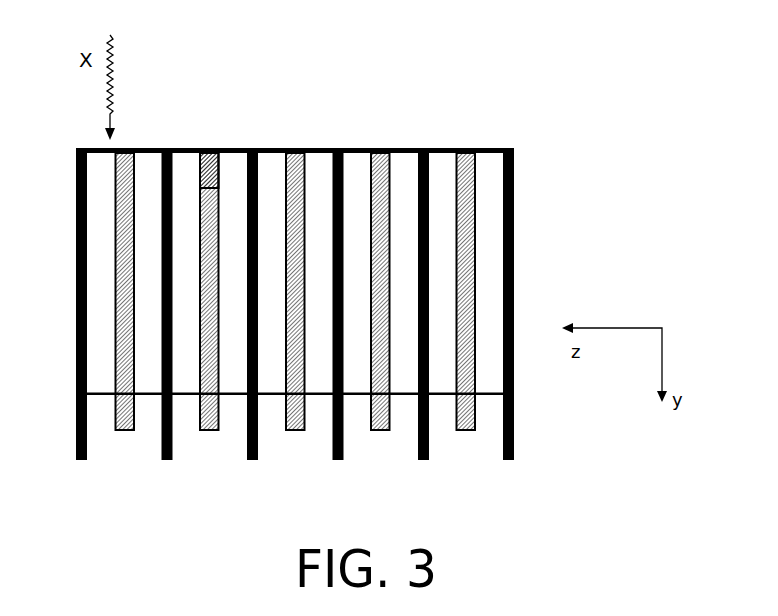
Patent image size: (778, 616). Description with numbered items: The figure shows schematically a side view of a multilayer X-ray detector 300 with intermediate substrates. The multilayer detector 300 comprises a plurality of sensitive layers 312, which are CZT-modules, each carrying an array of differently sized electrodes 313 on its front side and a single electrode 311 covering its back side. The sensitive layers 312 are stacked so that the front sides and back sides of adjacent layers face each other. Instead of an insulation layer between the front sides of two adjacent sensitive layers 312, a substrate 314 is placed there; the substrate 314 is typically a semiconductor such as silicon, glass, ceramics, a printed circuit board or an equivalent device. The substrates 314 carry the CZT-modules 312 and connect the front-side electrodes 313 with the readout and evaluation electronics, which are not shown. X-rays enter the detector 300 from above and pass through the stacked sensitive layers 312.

The multilayer detector 300 is at (361, 269).
The single electrode 311 is at (428, 173).
The sensitive layer 312 is at (407, 160).
The electrode 313 is at (368, 173).
The substrate 314 is at (212, 157).